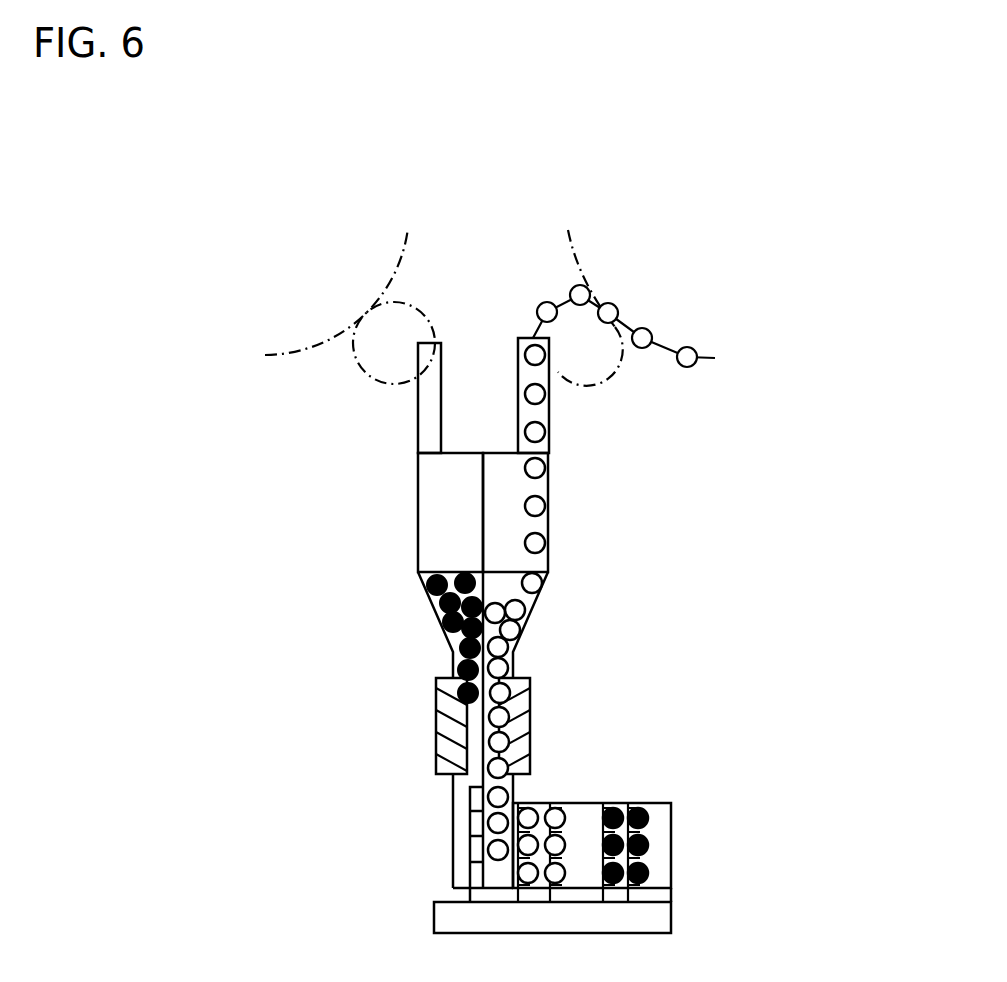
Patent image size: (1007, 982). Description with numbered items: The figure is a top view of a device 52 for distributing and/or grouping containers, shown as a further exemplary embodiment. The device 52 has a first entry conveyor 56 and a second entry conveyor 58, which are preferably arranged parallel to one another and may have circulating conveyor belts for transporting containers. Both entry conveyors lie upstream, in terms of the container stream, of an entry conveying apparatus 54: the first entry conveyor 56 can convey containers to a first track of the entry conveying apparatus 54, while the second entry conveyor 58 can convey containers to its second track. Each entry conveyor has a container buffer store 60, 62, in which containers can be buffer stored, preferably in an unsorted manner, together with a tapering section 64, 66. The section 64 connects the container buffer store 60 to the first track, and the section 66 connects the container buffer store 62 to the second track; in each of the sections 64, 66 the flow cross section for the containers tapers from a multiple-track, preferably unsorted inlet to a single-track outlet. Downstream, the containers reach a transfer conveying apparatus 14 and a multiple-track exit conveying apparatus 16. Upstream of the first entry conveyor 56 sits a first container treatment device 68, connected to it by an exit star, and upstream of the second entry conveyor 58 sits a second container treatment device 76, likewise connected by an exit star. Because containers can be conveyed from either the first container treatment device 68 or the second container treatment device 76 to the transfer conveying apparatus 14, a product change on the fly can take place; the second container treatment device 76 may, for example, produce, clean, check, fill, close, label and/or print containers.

The device 52 is at (506, 114).
The transfer conveying apparatus 14 is at (402, 915).
The multiple-track exit conveying apparatus 16 is at (703, 792).
The entry conveying apparatus 54 is at (395, 792).
The first entry conveyor 56 is at (300, 520).
The second entry conveyor 58 is at (712, 490).
The container buffer store 60 is at (420, 510).
The container buffer store 62 is at (548, 498).
The tapering section 64 is at (430, 613).
The tapering section 66 is at (540, 610).
The first container treatment device 68 is at (405, 239).
The second container treatment device 76 is at (572, 248).